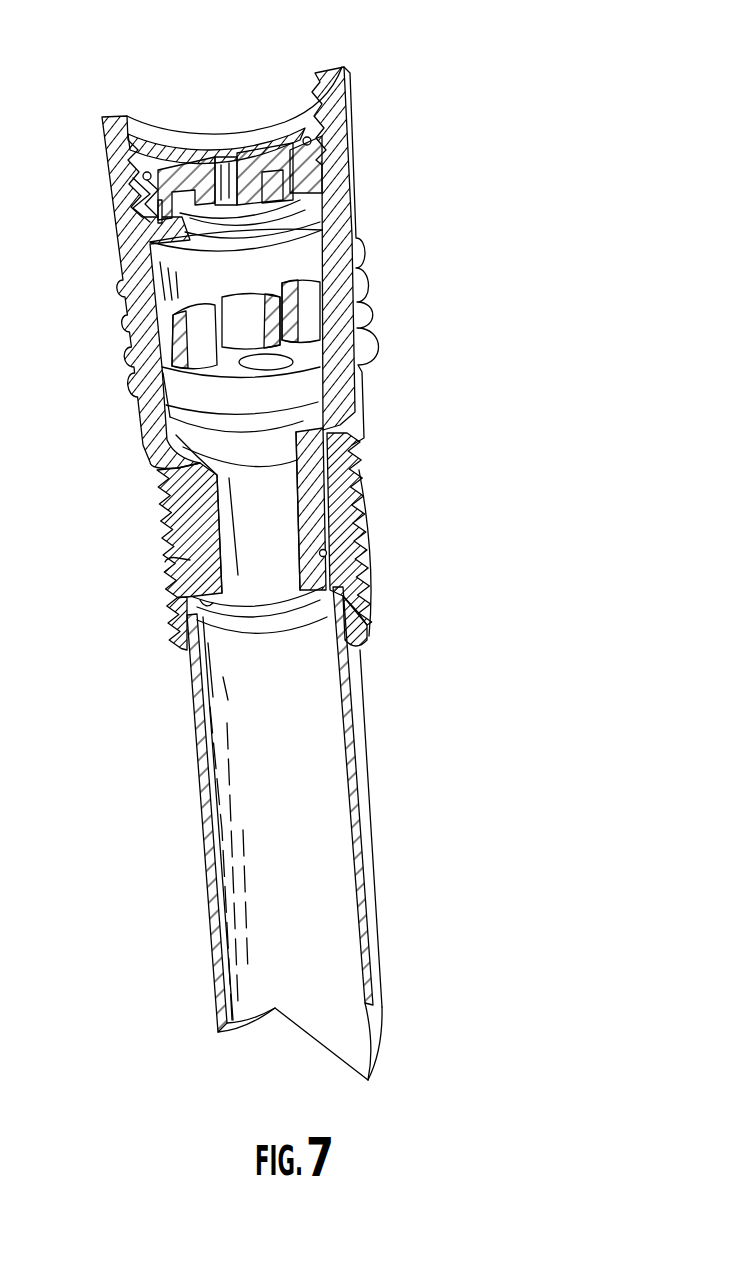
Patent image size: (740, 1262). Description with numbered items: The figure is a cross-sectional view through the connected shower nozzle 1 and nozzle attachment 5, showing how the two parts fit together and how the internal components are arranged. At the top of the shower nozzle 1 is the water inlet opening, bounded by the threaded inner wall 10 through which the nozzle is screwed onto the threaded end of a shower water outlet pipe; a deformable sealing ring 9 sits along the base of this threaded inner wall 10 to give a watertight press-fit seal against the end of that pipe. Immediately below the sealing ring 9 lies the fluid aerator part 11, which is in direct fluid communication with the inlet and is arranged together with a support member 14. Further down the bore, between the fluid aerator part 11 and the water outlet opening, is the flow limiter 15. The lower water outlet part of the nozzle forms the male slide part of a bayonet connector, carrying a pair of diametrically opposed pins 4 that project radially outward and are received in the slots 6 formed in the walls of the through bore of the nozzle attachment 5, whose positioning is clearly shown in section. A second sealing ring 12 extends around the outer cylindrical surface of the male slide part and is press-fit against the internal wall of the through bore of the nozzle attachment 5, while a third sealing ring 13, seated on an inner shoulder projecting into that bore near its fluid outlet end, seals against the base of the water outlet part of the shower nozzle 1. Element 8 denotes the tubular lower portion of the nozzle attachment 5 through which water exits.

The shower nozzle 1 is at (359, 170).
The pins 4 is at (165, 535).
The nozzle attachment 5 is at (490, 511).
The slots 6 is at (370, 593).
The tube 8 is at (313, 908).
The sealing ring 9 is at (313, 140).
The threaded inner wall 10 is at (262, 128).
The fluid aerator part 11 is at (293, 143).
The second sealing ring 12 is at (193, 563).
The third sealing ring 13 is at (170, 630).
The support member 14 is at (147, 206).
The flow limiter 15 is at (328, 293).